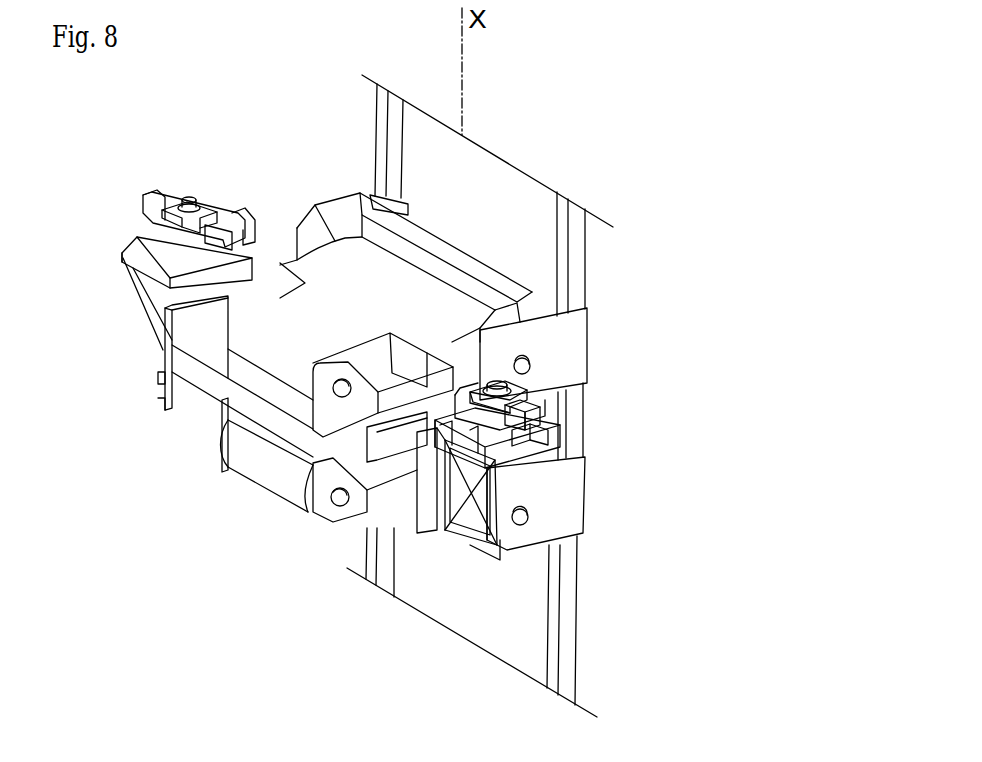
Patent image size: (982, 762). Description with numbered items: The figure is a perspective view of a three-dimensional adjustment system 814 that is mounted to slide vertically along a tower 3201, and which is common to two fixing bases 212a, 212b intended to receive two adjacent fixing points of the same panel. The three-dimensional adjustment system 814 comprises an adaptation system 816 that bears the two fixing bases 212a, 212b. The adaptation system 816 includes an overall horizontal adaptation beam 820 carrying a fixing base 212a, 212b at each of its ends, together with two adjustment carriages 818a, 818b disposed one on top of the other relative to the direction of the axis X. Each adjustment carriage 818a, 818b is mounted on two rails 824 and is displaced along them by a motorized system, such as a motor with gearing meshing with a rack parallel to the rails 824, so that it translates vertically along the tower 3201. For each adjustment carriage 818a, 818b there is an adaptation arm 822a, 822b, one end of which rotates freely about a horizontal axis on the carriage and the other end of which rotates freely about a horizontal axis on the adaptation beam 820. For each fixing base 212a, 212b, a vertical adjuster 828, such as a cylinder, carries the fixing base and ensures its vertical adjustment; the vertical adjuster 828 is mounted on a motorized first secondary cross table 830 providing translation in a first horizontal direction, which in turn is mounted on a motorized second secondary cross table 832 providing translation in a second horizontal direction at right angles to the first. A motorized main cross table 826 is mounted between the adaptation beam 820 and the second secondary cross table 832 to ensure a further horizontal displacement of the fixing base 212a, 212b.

The tower 3201 is at (465, 170).
The rails 824 is at (387, 157).
The main cross table 826 is at (367, 563).
The adaptation arm 822a is at (371, 318).
The adaptation arm 822b is at (292, 470).
The adaptation beam 820 is at (193, 372).
The fixing base 212a is at (185, 193).
The fixing base 212b is at (497, 380).
The adjustment carriage 818a is at (570, 360).
The adjustment carriage 818b is at (557, 500).
The vertical adjuster 828 is at (502, 383).
The first secondary cross table 830 is at (553, 410).
The second secondary cross table 832 is at (490, 483).
The adaptation system 816 is at (183, 507).
The three-dimensional adjustment system 814 is at (183, 587).